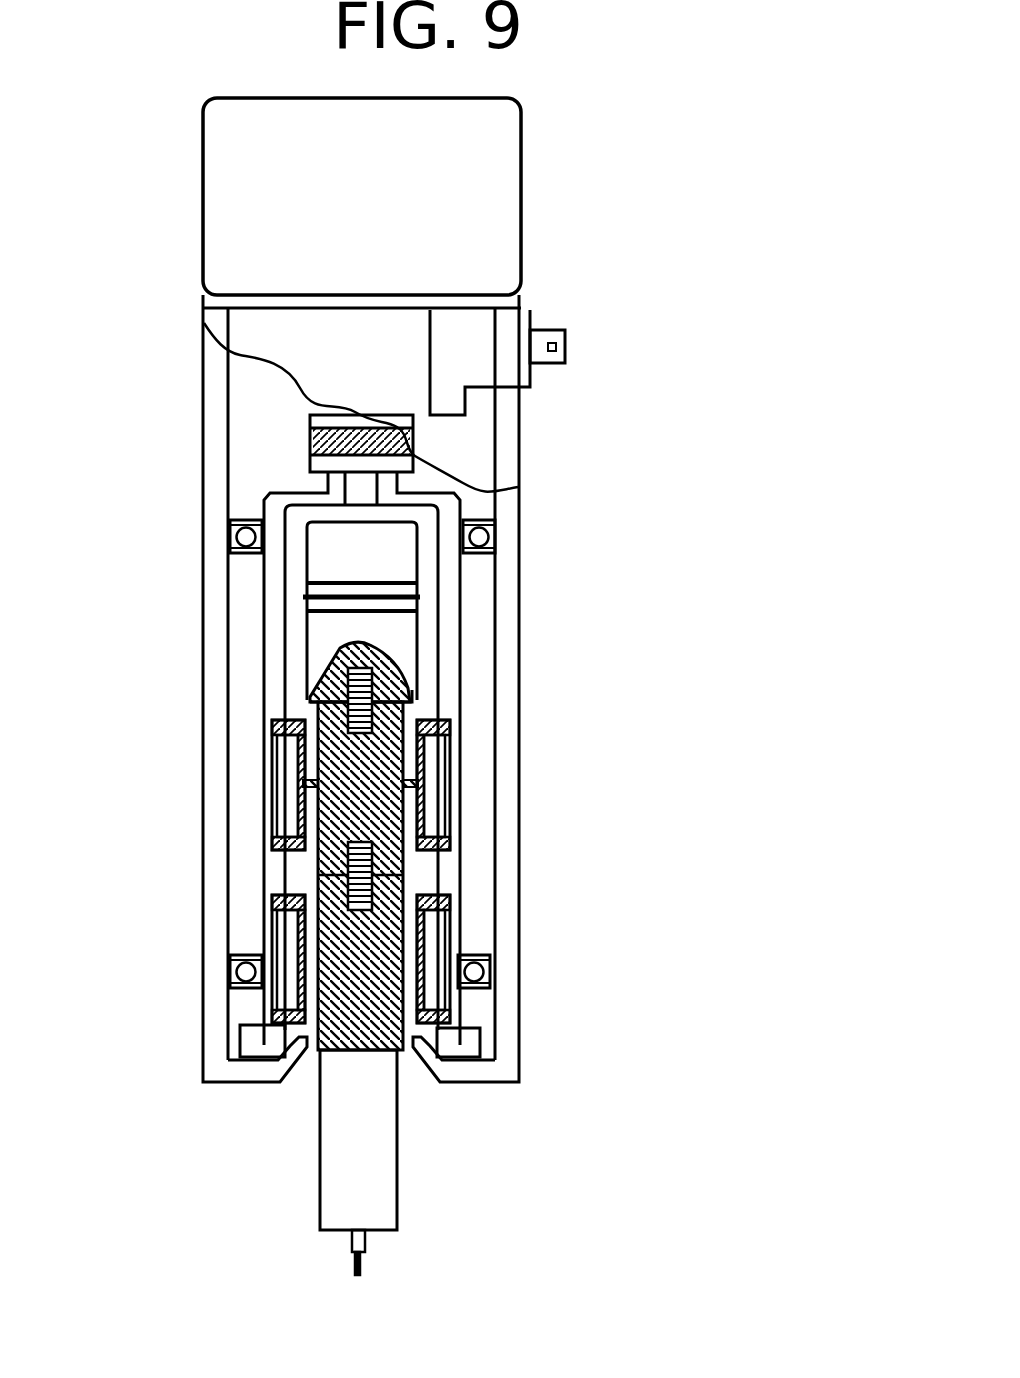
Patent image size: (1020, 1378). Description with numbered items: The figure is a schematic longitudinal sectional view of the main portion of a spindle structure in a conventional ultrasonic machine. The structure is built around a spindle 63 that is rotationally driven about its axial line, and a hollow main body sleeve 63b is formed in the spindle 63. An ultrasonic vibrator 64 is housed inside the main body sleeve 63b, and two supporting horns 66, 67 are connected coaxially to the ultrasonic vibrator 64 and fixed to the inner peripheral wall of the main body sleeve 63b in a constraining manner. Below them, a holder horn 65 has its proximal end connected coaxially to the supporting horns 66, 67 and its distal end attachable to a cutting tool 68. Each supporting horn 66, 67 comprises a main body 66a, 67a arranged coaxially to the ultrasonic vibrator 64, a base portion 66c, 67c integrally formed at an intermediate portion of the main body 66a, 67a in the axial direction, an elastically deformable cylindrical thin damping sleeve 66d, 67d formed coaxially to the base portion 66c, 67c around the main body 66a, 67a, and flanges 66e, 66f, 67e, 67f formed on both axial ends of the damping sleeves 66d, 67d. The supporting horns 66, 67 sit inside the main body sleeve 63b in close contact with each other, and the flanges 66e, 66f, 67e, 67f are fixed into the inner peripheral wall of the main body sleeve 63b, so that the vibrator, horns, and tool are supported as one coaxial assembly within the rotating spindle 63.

The spindle 63 is at (478, 678).
The main body sleeve 63b is at (452, 618).
The ultrasonic vibrator 64 is at (305, 665).
The holder horn 65 is at (373, 1180).
The supporting horn 66 is at (298, 797).
The main body 66a is at (293, 710).
The base portion 66c is at (437, 813).
The damping sleeve 66d is at (433, 755).
The flange 66e is at (443, 725).
The flange 66f is at (443, 847).
The supporting horn 67 is at (297, 933).
The main body 67a is at (310, 883).
The base portion 67c is at (443, 1013).
The damping sleeve 67d is at (433, 927).
The flange 67e is at (443, 900).
The flange 67f is at (450, 1015).
The cutting tool 68 is at (363, 1263).